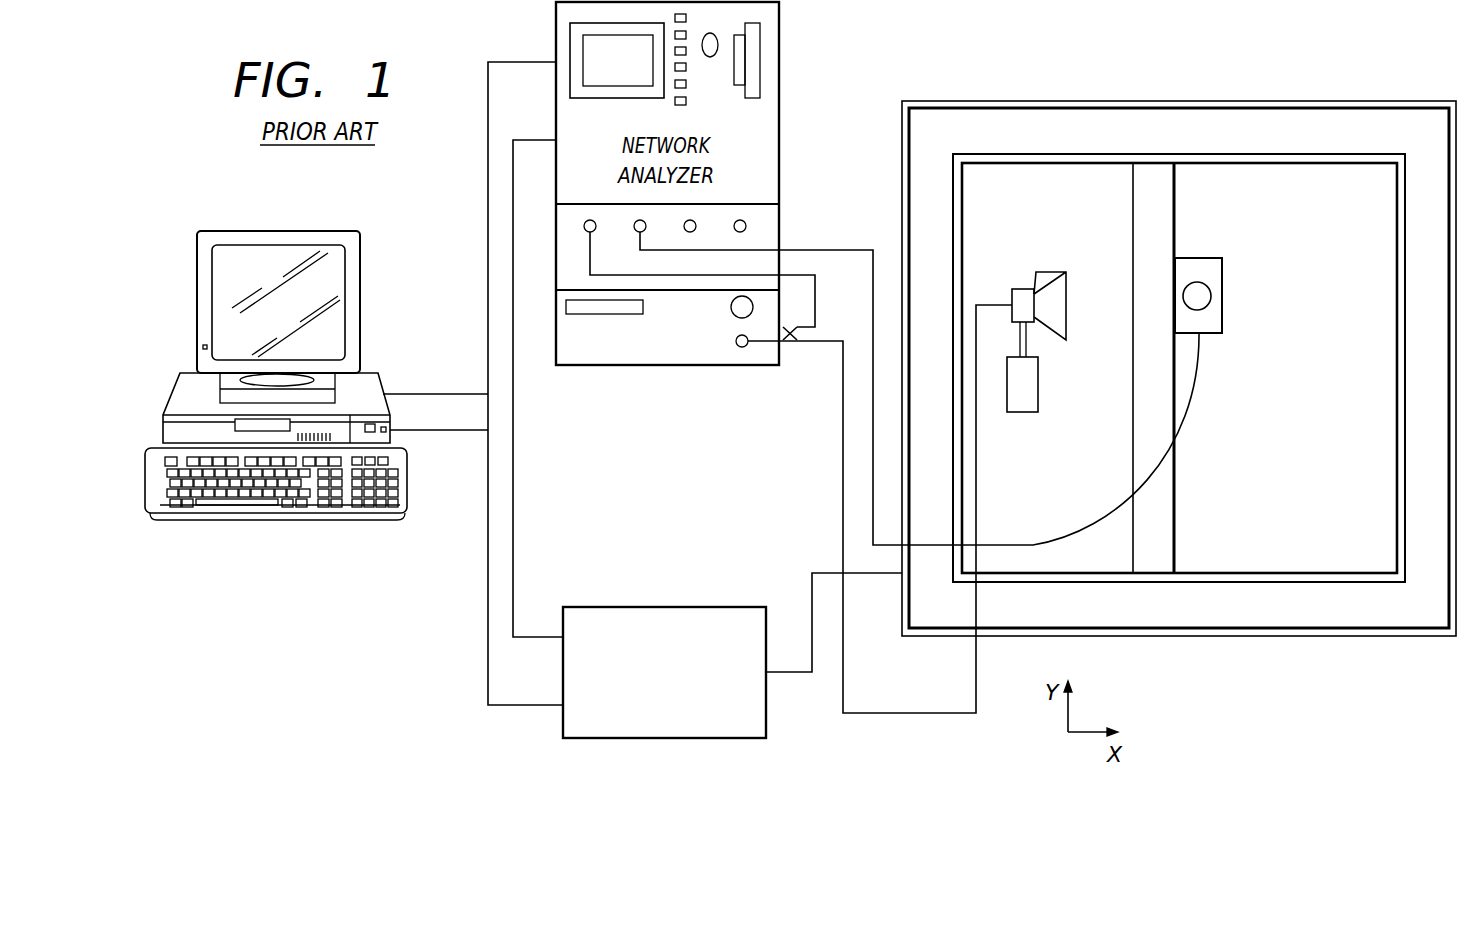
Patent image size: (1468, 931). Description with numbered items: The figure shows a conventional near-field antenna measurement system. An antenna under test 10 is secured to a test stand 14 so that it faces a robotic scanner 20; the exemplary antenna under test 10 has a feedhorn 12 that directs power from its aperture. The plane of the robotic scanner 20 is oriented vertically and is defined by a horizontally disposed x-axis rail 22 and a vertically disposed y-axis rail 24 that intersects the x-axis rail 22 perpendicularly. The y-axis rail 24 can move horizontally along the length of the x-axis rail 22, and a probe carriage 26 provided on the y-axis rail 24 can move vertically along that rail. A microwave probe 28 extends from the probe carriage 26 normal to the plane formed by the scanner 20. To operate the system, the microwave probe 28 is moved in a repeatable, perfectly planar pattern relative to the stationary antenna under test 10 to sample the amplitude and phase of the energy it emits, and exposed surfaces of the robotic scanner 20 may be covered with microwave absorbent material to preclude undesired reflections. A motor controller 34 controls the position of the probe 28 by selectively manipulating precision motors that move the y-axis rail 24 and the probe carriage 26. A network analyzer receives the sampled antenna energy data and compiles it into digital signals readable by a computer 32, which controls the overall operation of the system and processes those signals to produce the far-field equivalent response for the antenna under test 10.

The antenna under test 10 is at (1010, 284).
The feedhorn 12 is at (1048, 282).
The test stand 14 is at (1035, 390).
The robotic scanner 20 is at (1245, 90).
The x-axis rail 22 is at (1290, 573).
The y-axis rail 24 is at (1168, 545).
The probe carriage 26 is at (1210, 258).
The microwave probe 28 is at (1205, 293).
The computer 32 is at (288, 229).
The motor controller 34 is at (658, 740).